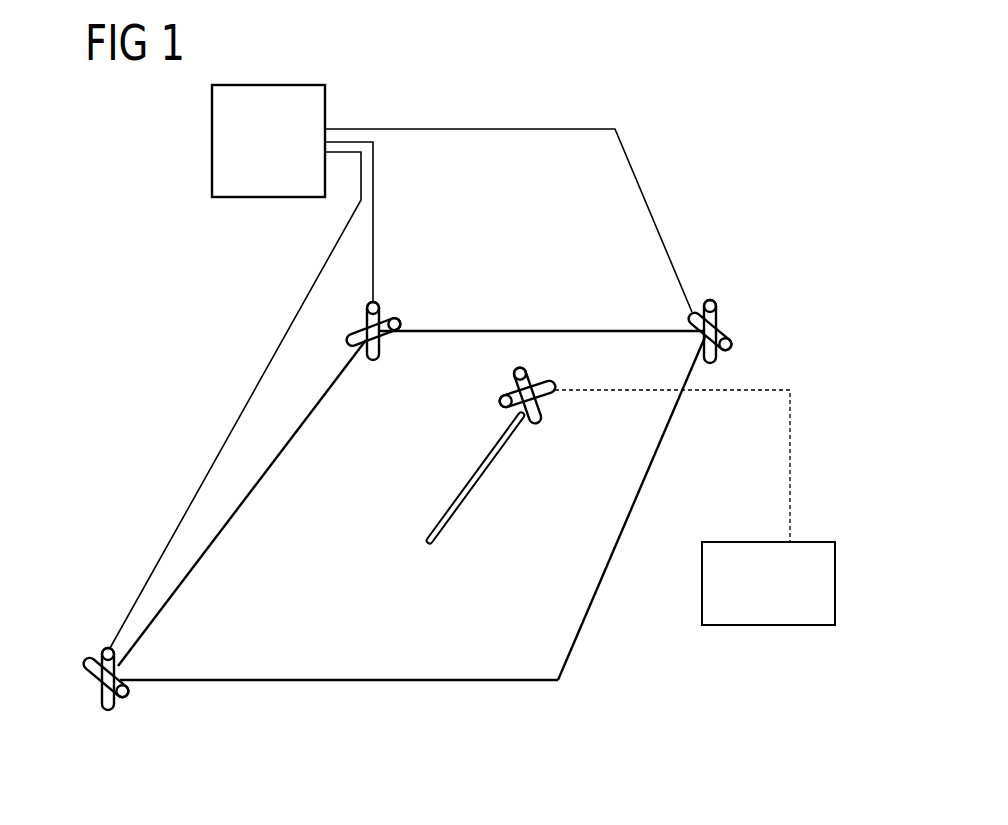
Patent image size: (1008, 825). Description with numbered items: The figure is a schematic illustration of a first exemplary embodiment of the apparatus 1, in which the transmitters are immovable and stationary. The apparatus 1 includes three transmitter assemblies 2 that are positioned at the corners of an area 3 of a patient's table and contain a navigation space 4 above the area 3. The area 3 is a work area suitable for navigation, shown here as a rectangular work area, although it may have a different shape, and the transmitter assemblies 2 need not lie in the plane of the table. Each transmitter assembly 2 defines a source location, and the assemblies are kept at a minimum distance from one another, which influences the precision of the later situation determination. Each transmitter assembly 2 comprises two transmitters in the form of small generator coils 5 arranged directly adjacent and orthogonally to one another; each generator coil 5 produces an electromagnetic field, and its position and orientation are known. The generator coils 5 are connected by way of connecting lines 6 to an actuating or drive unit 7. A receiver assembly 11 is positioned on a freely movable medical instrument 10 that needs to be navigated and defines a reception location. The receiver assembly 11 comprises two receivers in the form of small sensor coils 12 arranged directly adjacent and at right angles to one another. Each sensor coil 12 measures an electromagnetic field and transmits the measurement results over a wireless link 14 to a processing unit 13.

The apparatus 1 is at (716, 148).
The transmitter assembly 2 is at (400, 294).
The area 3 is at (550, 632).
The navigation space 4 is at (336, 436).
The generator coil 5 is at (354, 300).
The connecting line 6 is at (364, 152).
The drive unit 7 is at (212, 131).
The medical instrument 10 is at (458, 498).
The receiver assembly 11 is at (505, 382).
The sensor coil 12 is at (540, 385).
The processing unit 13 is at (835, 583).
The wireless link 14 is at (790, 462).